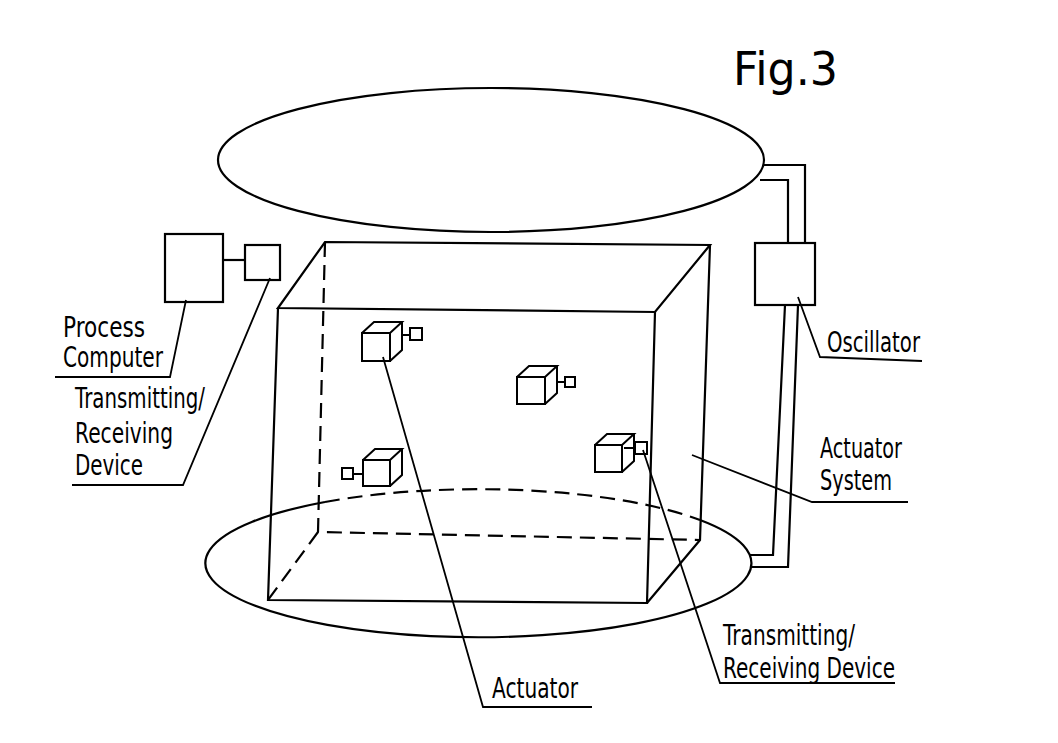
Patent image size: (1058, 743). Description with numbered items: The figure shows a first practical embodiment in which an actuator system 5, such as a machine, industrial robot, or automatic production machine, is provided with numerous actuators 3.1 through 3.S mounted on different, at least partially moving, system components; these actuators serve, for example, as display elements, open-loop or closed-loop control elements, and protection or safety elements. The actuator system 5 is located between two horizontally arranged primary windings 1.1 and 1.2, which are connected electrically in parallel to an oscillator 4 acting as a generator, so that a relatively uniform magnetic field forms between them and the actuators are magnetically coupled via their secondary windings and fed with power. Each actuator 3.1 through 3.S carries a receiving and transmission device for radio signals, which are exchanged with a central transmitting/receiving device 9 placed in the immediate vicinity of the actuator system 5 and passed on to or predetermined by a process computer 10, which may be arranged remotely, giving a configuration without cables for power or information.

The primary winding 1.1 is at (268, 116).
The primary winding 1.2 is at (237, 526).
The actuator 3.1 is at (378, 343).
The actuator 3.S is at (607, 455).
The oscillator 4 is at (800, 273).
The actuator system 5 is at (693, 390).
The transmitting/receiving device 9 is at (266, 262).
The process computer 10 is at (183, 252).